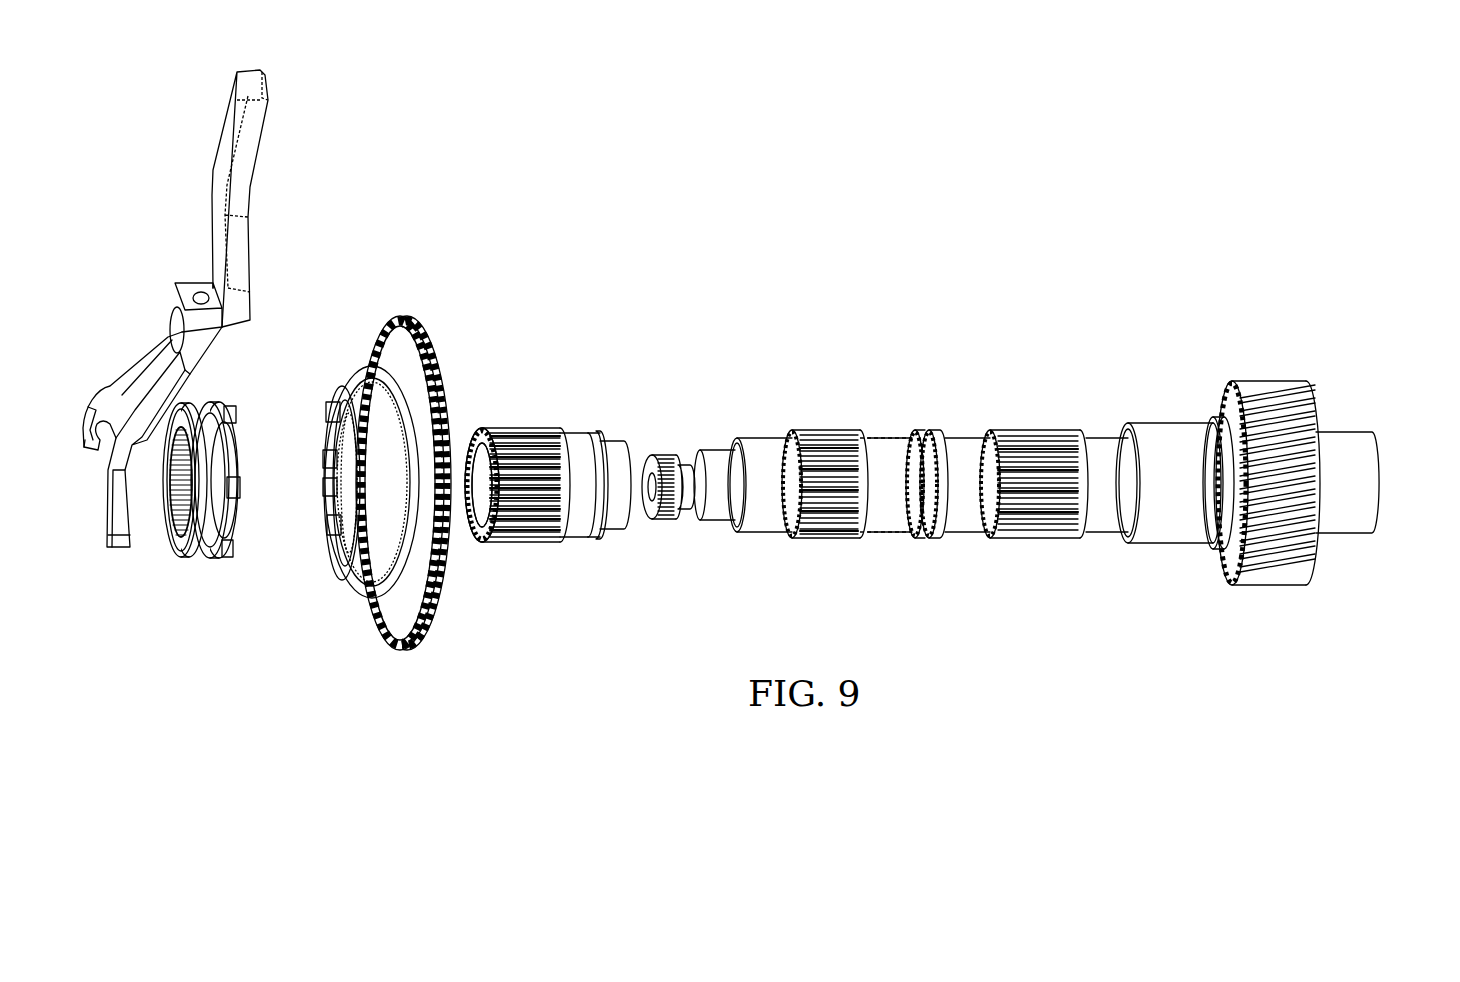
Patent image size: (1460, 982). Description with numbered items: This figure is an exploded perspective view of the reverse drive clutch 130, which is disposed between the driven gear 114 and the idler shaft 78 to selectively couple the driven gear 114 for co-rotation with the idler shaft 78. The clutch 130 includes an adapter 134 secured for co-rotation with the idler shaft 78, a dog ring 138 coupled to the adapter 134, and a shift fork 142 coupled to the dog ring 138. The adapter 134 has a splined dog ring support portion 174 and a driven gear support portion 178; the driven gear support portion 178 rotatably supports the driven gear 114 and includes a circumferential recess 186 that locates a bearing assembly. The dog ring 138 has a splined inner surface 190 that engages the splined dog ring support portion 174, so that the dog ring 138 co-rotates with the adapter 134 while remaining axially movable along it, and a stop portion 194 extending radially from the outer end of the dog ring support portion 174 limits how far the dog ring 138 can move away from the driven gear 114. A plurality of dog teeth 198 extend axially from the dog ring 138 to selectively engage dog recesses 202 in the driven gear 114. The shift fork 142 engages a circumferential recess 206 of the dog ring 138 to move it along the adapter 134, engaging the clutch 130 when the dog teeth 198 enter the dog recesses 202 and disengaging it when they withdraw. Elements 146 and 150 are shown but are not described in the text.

The idler shaft 78 is at (1384, 455).
The driven gear 114 is at (349, 459).
The reverse drive clutch 130 is at (349, 502).
The adapter 134 is at (539, 477).
The dog ring 138 is at (220, 520).
The shift fork 142 is at (246, 262).
The splined coupling 146 is at (665, 454).
The bore 150 is at (460, 460).
The dog ring support portion 174 is at (509, 491).
The driven gear support portion 178 is at (595, 498).
The circumferential recess 186 is at (558, 367).
The inner surface 190 is at (184, 532).
The stop portion 194 is at (484, 532).
The dog teeth 198 is at (237, 407).
The dog recesses 202 is at (325, 420).
The circumferential recess 206 is at (198, 560).